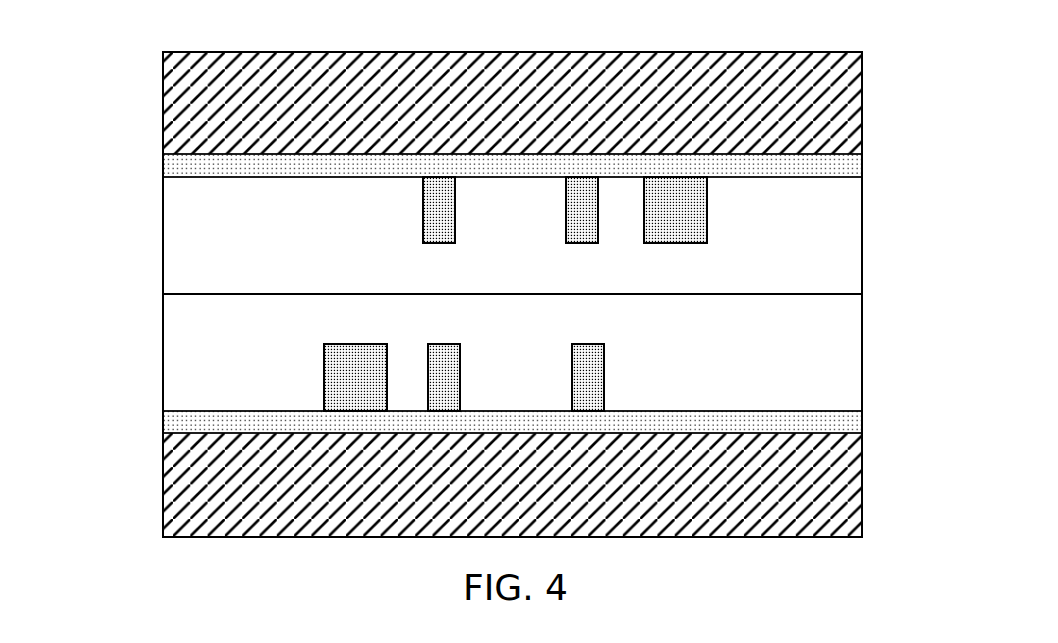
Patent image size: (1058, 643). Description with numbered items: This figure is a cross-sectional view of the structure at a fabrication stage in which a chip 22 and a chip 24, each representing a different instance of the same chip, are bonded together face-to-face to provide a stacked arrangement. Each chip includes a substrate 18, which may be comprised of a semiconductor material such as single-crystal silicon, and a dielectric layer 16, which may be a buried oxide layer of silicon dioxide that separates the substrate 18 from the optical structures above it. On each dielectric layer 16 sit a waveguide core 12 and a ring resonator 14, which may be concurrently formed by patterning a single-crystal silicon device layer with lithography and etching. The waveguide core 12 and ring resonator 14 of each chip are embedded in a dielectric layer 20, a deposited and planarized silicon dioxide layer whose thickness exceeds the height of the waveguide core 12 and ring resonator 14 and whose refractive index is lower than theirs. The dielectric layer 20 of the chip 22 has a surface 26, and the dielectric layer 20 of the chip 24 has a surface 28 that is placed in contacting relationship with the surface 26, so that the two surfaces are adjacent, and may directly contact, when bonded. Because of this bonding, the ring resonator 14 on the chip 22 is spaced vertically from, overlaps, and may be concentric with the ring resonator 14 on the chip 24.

The waveguide core 12 is at (685, 212).
The ring resonator 14 is at (437, 213).
The dielectric layer 16 is at (196, 167).
The substrate 18 is at (196, 110).
The dielectric layer 20 is at (805, 270).
The chip 22 is at (145, 297).
The chip 24 is at (140, 55).
The surface 26 is at (316, 294).
The surface 28 is at (702, 294).